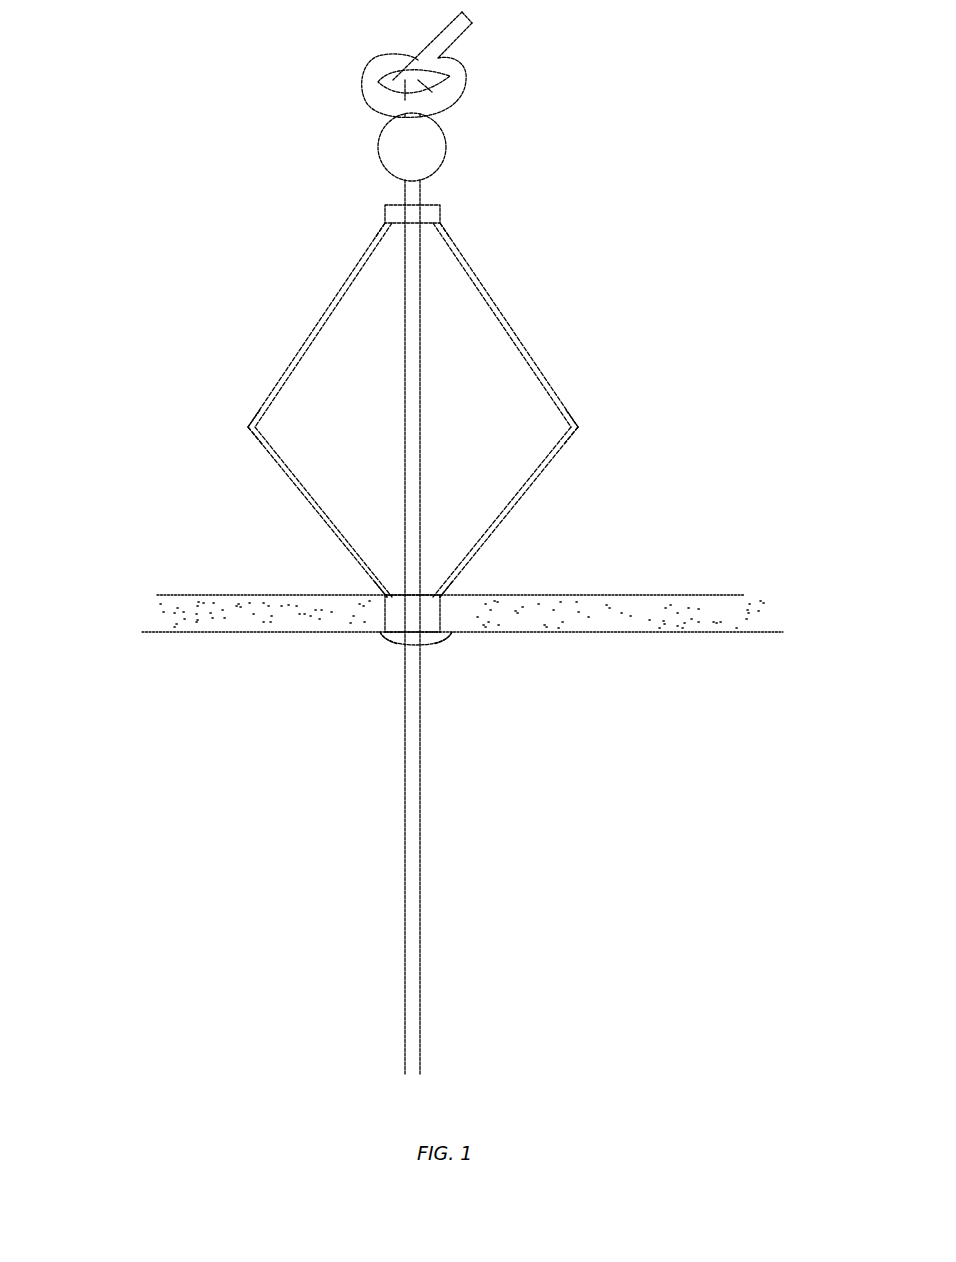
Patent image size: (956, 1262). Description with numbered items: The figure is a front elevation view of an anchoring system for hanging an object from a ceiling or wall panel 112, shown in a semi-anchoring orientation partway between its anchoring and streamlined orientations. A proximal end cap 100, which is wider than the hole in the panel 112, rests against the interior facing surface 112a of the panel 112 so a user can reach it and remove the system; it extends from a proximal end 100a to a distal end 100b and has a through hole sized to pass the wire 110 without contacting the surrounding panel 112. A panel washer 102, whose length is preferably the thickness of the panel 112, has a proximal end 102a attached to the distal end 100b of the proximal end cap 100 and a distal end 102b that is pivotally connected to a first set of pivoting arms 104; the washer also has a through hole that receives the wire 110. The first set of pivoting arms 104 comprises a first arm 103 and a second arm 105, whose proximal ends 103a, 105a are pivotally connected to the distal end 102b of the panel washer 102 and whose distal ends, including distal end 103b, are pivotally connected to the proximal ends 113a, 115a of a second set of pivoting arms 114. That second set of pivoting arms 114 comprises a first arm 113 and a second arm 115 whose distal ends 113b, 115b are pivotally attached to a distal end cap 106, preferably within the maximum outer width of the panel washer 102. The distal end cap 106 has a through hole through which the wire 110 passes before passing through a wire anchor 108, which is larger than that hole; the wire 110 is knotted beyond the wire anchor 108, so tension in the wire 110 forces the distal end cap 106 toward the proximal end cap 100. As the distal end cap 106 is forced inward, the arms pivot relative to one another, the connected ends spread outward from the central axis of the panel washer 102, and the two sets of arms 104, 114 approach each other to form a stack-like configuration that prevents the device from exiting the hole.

The proximal end cap 100 is at (407, 638).
The proximal end 100a is at (440, 643).
The distal end 100b is at (378, 632).
The panel washer 102 is at (422, 610).
The proximal end 102a is at (430, 627).
The distal end 102b is at (430, 594).
The first arm 103 is at (288, 476).
The proximal end 103a is at (378, 593).
The distal end 103b is at (270, 452).
The first set of pivoting arms 104 is at (470, 535).
The second arm 105 is at (537, 478).
The proximal end 105a is at (575, 437).
The distal end cap 106 is at (442, 208).
The wire anchor 108 is at (448, 138).
The wire 110 is at (403, 905).
The panel 112 is at (648, 620).
The interior facing surface 112a is at (688, 633).
The first arm 113 is at (288, 375).
The proximal end 113a is at (257, 412).
The distal end 113b is at (385, 222).
The second set of pivoting arms 114 is at (493, 312).
The second arm 115 is at (505, 328).
The proximal end 115a is at (570, 405).
The distal end 115b is at (443, 228).